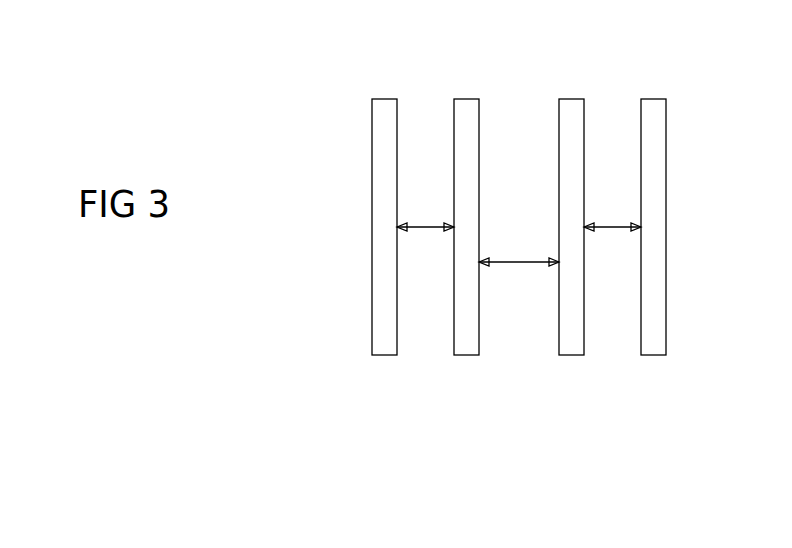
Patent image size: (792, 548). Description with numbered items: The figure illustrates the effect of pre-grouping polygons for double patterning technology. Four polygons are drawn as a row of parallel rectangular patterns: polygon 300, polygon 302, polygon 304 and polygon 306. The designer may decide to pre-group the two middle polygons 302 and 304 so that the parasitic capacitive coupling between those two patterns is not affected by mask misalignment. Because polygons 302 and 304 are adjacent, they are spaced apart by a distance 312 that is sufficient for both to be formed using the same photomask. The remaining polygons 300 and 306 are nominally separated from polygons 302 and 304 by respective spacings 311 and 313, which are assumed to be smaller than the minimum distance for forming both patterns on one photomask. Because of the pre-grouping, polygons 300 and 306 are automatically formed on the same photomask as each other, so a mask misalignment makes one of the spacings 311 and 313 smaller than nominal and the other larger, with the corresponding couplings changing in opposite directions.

The polygon 300 is at (385, 98).
The polygon 302 is at (466, 97).
The polygon 304 is at (571, 98).
The polygon 306 is at (653, 98).
The spacing 311 is at (428, 228).
The distance 312 is at (520, 265).
The spacing 313 is at (617, 230).